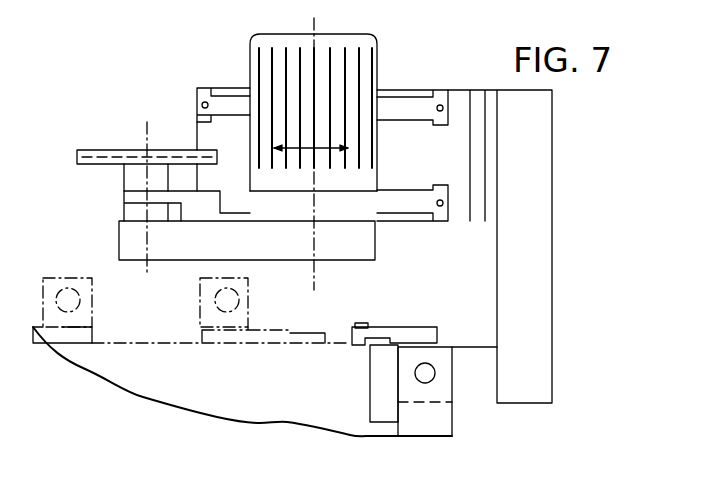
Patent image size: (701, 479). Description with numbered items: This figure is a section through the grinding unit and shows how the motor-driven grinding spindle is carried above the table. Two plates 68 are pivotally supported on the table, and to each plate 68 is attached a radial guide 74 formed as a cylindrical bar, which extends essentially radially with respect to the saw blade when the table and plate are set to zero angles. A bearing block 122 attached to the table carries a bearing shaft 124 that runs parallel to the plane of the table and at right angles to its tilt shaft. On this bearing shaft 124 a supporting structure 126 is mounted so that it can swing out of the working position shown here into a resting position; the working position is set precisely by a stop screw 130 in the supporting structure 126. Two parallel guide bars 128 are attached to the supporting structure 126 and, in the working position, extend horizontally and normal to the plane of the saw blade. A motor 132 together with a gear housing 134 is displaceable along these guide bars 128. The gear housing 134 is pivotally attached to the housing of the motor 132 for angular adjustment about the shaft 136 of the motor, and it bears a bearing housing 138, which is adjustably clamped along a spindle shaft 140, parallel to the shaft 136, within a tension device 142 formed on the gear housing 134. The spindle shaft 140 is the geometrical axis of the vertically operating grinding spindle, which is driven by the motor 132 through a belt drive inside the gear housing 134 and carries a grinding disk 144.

The plate 68 is at (65, 337).
The radial guide 74 is at (215, 303).
The bearing block 122 is at (380, 395).
The bearing shaft 124 is at (435, 372).
The supporting structure 126 is at (556, 112).
The guide bars 128 is at (415, 112).
The stop screw 130 is at (348, 345).
The motor 132 is at (374, 45).
The gear housing 134 is at (372, 247).
The shaft of the motor 136 is at (314, 276).
The bearing housing 138 is at (133, 178).
The spindle shaft 140 is at (147, 140).
The tension device 142 is at (127, 196).
The grinding disk 144 is at (90, 152).